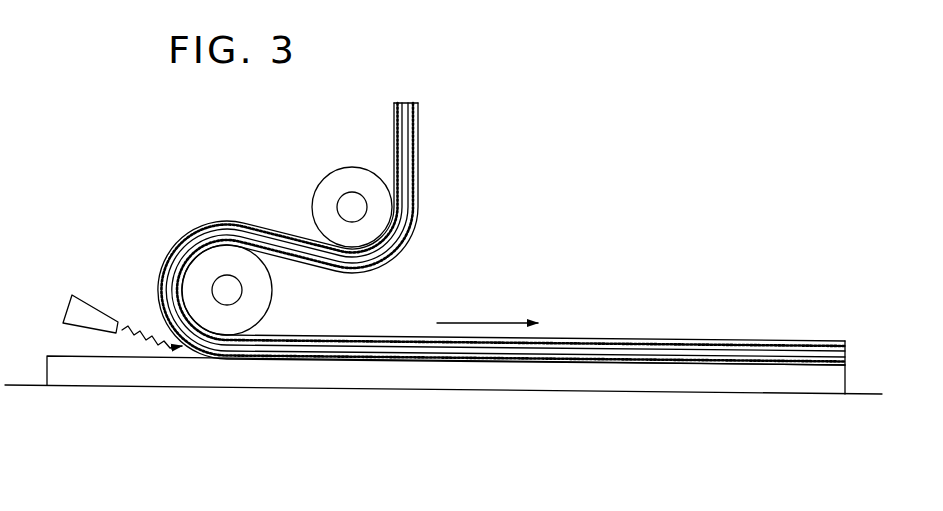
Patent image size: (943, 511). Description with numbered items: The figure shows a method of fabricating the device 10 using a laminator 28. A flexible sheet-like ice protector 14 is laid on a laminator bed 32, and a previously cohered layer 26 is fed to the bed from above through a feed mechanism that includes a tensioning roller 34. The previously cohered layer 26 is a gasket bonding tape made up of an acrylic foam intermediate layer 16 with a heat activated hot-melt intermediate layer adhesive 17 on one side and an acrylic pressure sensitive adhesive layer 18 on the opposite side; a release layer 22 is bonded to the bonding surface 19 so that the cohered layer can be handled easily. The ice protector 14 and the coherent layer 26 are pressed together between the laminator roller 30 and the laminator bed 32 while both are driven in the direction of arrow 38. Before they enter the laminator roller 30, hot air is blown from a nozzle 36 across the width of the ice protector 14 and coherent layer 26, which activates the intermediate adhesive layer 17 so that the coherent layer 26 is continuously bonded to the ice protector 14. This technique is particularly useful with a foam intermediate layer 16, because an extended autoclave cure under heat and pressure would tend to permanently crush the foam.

The device 10 is at (530, 242).
The flexible sheet-like ice protector 14 is at (807, 376).
The intermediate layer 16 is at (403, 112).
The intermediate layer adhesive 17 is at (394, 125).
The pressure sensitive adhesive layer 18 is at (418, 126).
The bonding surface 19 is at (418, 173).
The release layer 22 is at (418, 150).
The previously cohered layer 26 is at (420, 101).
The laminator 28 is at (143, 242).
The laminator roller 30 is at (260, 298).
The laminator bed 32 is at (33, 383).
The tensioning roller 34 is at (330, 187).
The nozzle 36 is at (90, 313).
The arrow 38 is at (478, 322).